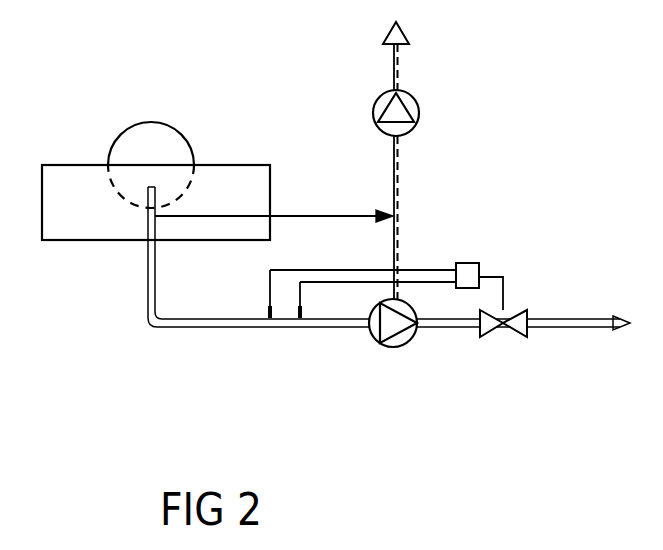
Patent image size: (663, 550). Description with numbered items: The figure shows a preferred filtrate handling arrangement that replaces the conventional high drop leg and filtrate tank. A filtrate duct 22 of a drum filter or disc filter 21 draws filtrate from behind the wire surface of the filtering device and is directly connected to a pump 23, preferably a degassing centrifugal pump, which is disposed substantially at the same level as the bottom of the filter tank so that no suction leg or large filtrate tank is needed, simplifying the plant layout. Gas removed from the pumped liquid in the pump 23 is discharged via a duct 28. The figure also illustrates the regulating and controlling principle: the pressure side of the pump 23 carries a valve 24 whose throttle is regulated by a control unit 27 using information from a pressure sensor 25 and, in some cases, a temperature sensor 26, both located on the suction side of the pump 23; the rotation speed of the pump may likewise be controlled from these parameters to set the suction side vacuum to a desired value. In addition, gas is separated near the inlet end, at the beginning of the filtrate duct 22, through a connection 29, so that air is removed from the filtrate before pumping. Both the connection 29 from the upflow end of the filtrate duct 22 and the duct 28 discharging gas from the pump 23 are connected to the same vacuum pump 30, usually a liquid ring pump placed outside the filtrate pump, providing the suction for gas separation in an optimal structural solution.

The disc filter 21 is at (197, 145).
The filtrate duct 22 is at (207, 328).
The pump 23 is at (398, 347).
The valve 24 is at (503, 337).
The pressure sensor 25 is at (302, 328).
The temperature sensor 26 is at (270, 328).
The control unit 27 is at (477, 265).
The duct 28 is at (399, 221).
The connection 29 is at (257, 216).
The vacuum pump 30 is at (416, 100).